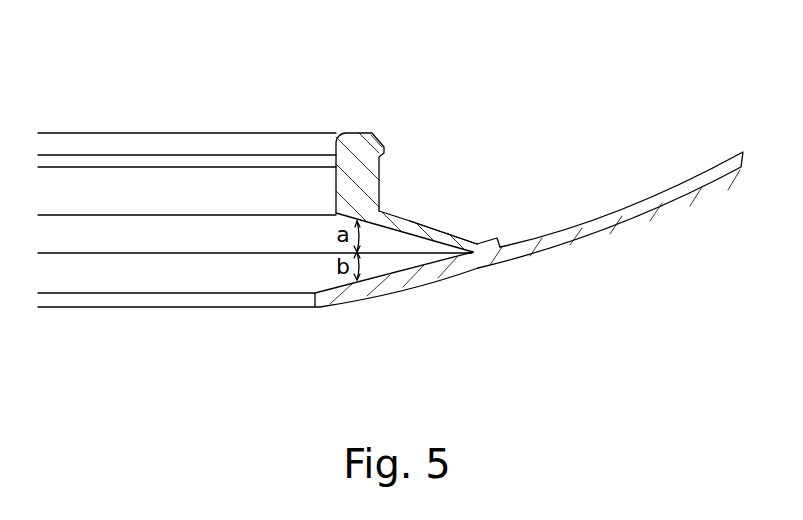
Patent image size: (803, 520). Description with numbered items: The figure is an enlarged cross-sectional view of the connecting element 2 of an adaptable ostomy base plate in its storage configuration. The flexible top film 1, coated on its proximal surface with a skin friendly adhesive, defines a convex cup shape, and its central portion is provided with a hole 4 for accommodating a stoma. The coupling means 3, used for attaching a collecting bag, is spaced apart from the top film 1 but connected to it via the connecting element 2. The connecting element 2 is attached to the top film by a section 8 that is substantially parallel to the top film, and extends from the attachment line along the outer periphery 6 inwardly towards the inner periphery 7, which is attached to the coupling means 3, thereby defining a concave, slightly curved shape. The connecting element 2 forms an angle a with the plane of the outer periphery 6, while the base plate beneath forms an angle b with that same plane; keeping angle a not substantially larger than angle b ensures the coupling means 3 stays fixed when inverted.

The top film 1 is at (629, 195).
The connecting element 2 is at (440, 232).
The coupling means 3 is at (360, 150).
The hole 4 is at (177, 300).
The outer periphery 6 is at (476, 254).
The inner periphery 7 is at (410, 220).
The section 8 is at (500, 247).